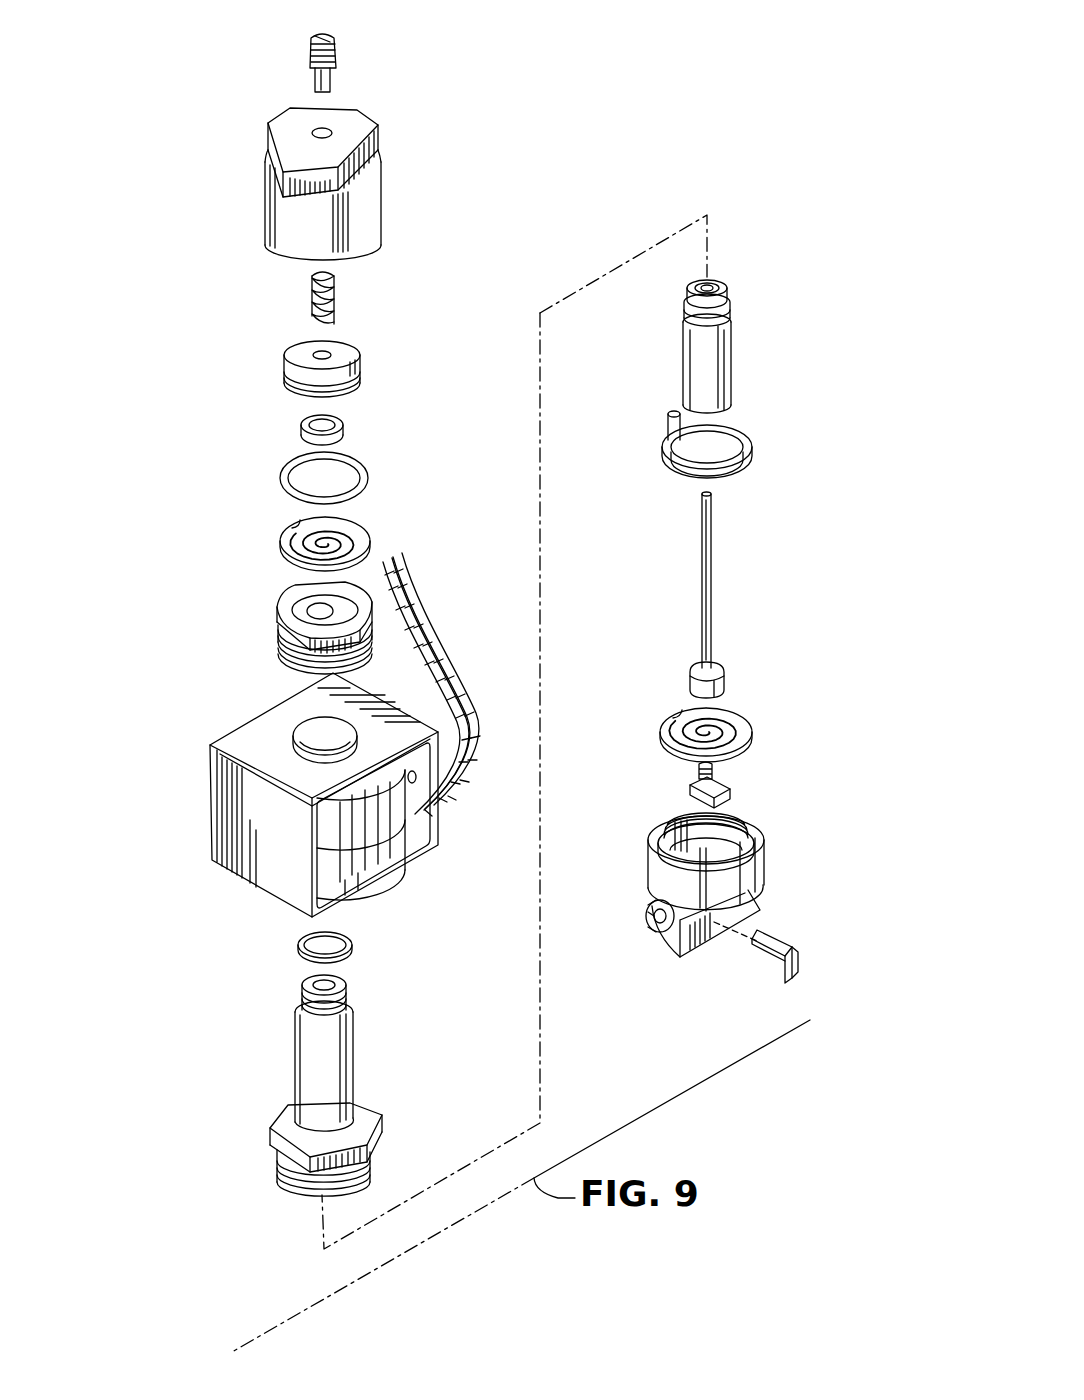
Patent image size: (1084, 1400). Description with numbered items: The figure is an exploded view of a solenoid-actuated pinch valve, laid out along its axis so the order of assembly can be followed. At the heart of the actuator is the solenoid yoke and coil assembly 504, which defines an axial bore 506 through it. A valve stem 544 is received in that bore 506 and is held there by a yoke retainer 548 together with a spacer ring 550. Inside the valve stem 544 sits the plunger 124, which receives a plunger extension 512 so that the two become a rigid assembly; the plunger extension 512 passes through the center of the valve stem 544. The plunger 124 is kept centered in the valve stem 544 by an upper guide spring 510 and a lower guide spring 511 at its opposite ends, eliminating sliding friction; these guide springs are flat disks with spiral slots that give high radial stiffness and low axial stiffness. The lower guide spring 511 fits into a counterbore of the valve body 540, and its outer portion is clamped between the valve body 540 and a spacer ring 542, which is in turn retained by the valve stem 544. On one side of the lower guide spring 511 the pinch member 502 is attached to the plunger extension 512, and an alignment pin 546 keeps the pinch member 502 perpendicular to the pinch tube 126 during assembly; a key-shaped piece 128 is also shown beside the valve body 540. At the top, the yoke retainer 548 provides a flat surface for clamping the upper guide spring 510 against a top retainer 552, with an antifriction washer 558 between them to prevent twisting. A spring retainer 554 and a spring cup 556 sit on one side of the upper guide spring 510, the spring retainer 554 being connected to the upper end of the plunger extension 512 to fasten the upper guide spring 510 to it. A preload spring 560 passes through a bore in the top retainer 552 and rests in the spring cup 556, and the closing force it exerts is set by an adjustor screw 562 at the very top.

The adjustor screw 562 is at (338, 58).
The top retainer 552 is at (270, 198).
The preload spring 560 is at (338, 290).
The spring cup 556 is at (290, 366).
The spring retainer 554 is at (303, 430).
The antifriction washer 558 is at (367, 480).
The upper guide spring 510 is at (283, 546).
The yoke retainer 548 is at (283, 637).
The axial bore 506 is at (294, 731).
The solenoid yoke and coil assembly 504 is at (213, 815).
The spacer ring 550 is at (300, 941).
The valve stem 544 is at (348, 1077).
The plunger 124 is at (735, 357).
The alignment pin 546 is at (668, 432).
The spacer ring 542 is at (750, 456).
The plunger extension 512 is at (728, 681).
The lower guide spring 511 is at (750, 736).
The pinch member 502 is at (735, 797).
The valve body 540 is at (652, 878).
The pinch tube 126 is at (652, 920).
The key 128 is at (785, 932).